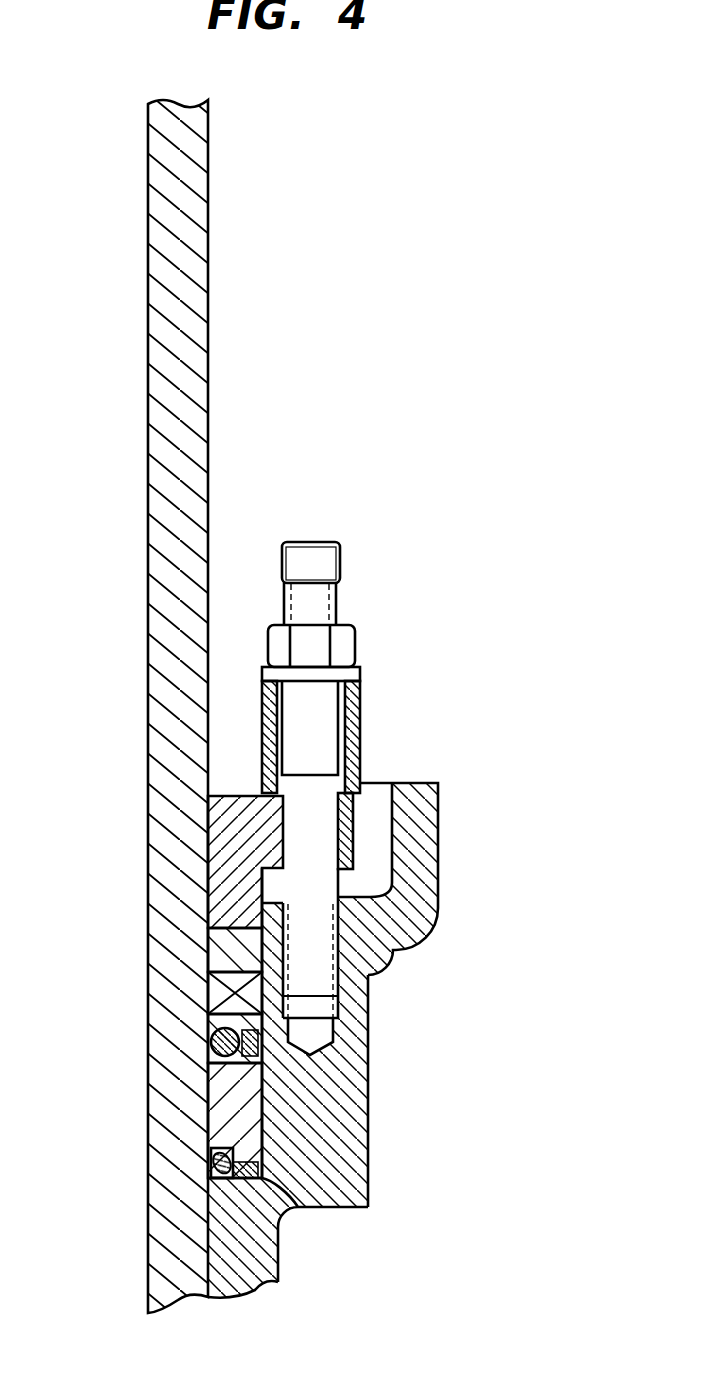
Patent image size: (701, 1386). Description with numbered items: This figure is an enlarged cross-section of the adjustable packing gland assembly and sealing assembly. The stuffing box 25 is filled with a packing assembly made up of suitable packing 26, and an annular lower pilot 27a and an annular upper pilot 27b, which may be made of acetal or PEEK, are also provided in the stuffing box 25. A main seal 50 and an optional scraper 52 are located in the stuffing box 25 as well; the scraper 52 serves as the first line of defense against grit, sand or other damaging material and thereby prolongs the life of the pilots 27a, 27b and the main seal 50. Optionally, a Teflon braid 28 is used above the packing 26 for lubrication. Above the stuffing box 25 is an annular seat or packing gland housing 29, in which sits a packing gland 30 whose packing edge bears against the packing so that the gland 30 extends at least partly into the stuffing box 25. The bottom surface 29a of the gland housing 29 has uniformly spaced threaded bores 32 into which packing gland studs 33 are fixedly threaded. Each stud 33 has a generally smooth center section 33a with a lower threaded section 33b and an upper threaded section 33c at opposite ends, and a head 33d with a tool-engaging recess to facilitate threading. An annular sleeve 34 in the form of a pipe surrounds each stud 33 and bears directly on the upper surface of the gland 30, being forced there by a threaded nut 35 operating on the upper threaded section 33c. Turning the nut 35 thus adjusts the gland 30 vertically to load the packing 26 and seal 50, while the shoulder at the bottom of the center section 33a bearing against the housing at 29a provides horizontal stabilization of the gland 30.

The stuffing box 25 is at (267, 1088).
The packing 26 is at (298, 1207).
The lower pilot 27a is at (208, 1130).
The upper pilot 27b is at (208, 957).
The Teflon braid 28 is at (208, 988).
The packing gland housing 29 is at (378, 847).
The bottom surface 29a is at (437, 914).
The packing gland 30 is at (345, 817).
The threaded bore 32 is at (338, 993).
The packing gland stud 33 is at (284, 607).
The smooth center section 33a is at (365, 898).
The lower threaded section 33b is at (308, 984).
The upper threaded section 33c is at (338, 600).
The head 33d is at (327, 541).
The annular sleeve 34 is at (360, 700).
The threaded nut 35 is at (355, 648).
The main seal 50 is at (208, 1043).
The scraper 52 is at (208, 1167).